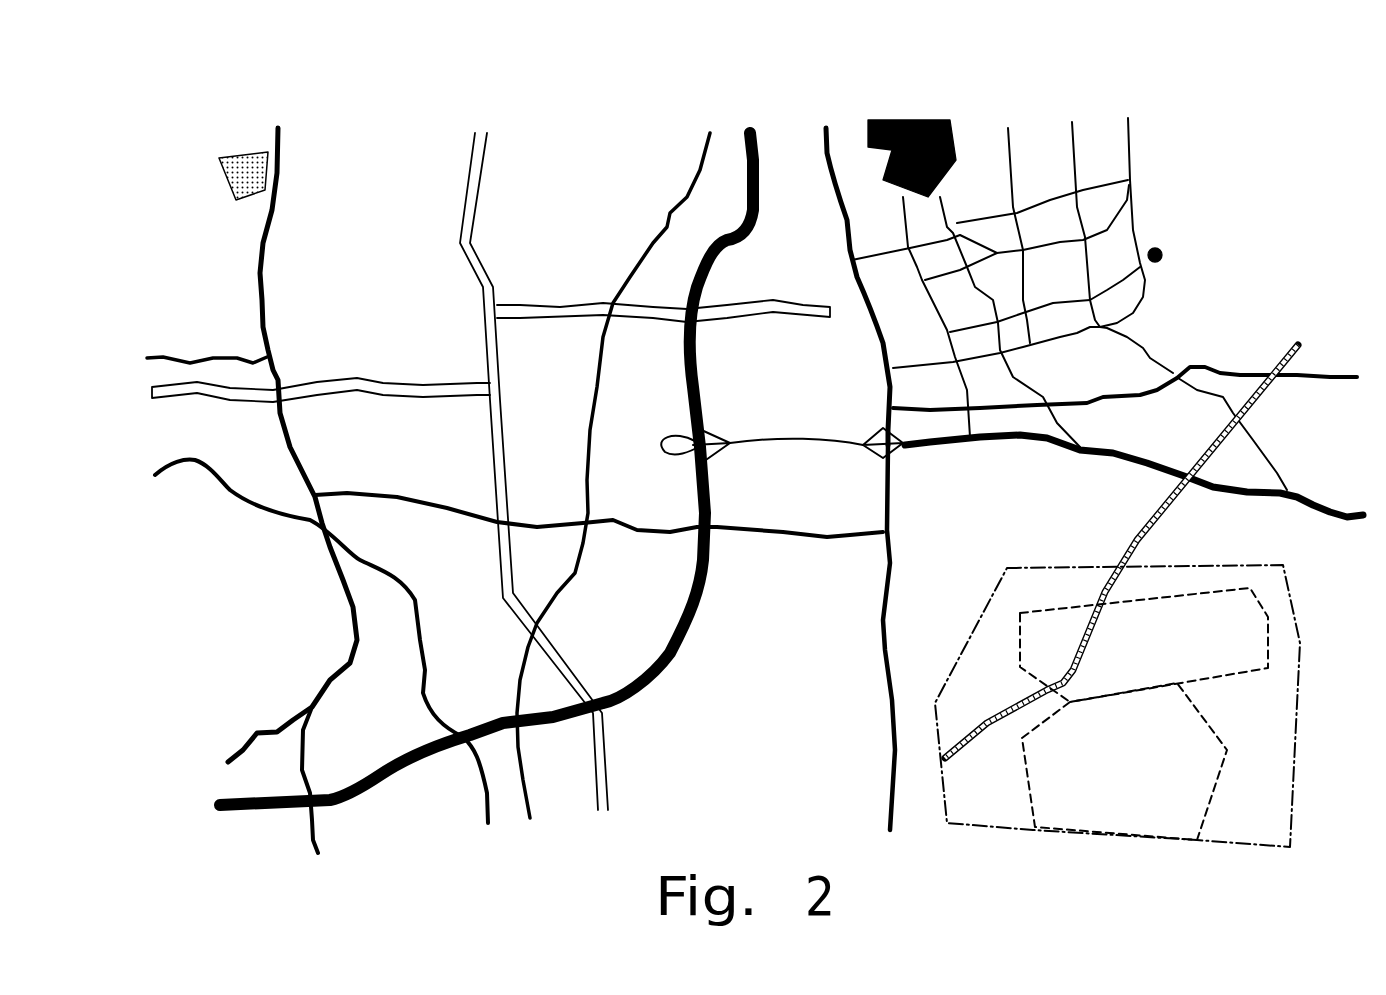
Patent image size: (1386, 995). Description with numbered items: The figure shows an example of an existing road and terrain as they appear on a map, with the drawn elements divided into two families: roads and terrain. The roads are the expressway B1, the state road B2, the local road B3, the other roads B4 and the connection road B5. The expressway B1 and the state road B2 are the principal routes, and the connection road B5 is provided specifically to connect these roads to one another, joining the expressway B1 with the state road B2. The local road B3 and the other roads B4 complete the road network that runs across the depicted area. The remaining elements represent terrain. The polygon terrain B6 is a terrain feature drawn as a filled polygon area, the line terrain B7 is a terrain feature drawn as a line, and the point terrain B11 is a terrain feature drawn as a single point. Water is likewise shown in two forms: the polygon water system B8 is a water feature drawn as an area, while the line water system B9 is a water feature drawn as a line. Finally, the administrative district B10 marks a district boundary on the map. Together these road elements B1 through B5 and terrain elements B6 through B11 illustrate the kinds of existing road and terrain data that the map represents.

The expressway B1 is at (765, 145).
The state road B2 is at (880, 357).
The local road B3 is at (880, 595).
The other roads B4 is at (250, 504).
The connection road B5 is at (790, 437).
The polygon terrain B6 is at (903, 117).
The line terrain B7 is at (1130, 533).
The polygon water system B8 is at (218, 172).
The line water system B9 is at (470, 172).
The administrative district B10 is at (935, 828).
The point terrain B11 is at (1168, 253).